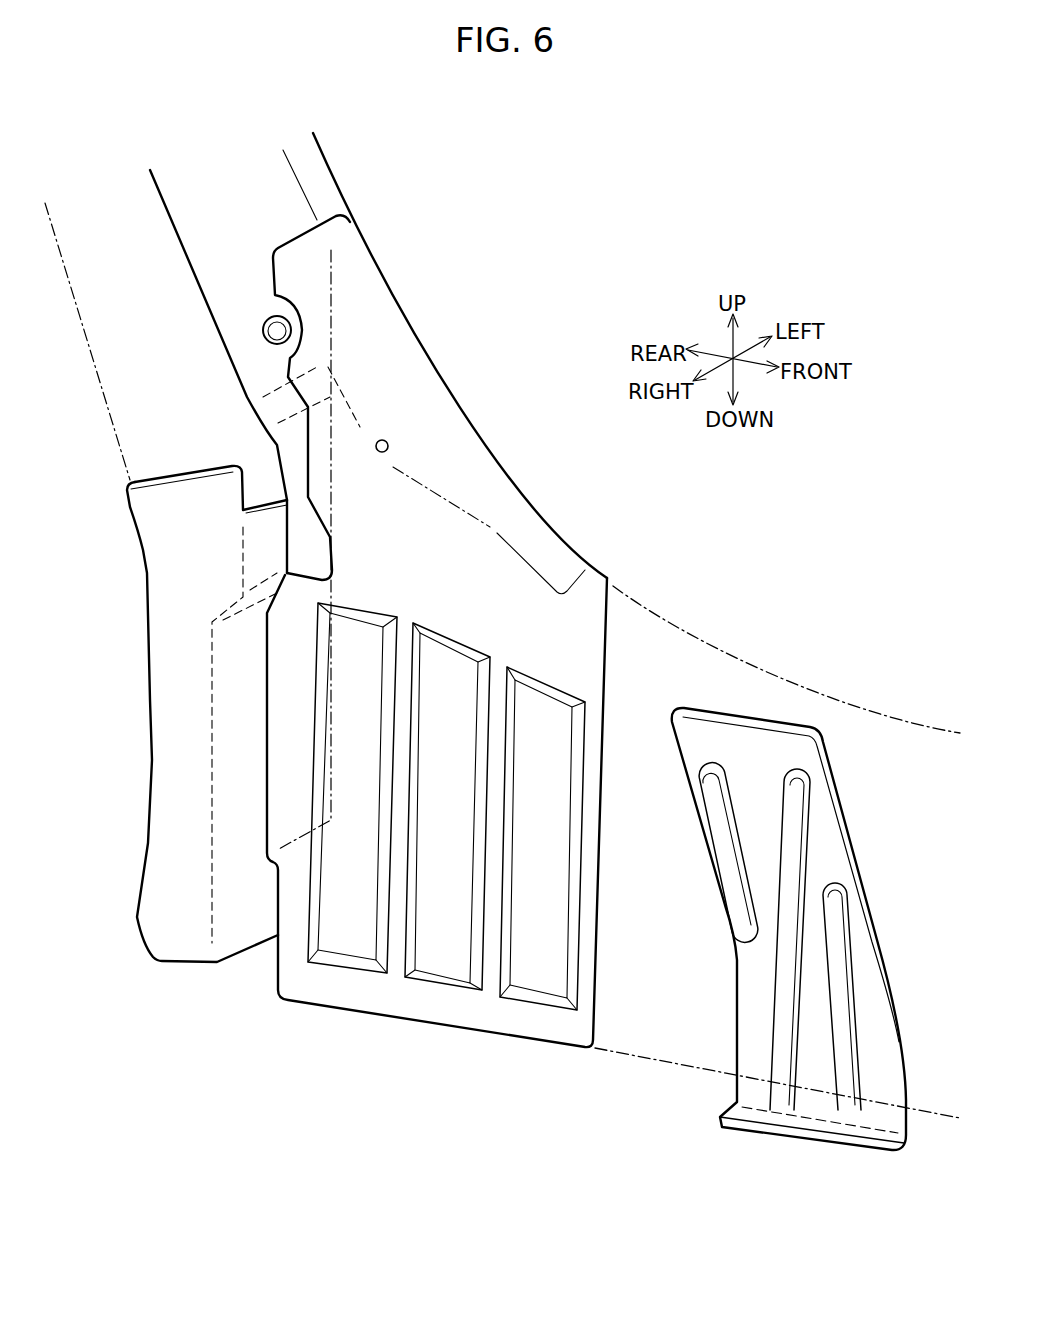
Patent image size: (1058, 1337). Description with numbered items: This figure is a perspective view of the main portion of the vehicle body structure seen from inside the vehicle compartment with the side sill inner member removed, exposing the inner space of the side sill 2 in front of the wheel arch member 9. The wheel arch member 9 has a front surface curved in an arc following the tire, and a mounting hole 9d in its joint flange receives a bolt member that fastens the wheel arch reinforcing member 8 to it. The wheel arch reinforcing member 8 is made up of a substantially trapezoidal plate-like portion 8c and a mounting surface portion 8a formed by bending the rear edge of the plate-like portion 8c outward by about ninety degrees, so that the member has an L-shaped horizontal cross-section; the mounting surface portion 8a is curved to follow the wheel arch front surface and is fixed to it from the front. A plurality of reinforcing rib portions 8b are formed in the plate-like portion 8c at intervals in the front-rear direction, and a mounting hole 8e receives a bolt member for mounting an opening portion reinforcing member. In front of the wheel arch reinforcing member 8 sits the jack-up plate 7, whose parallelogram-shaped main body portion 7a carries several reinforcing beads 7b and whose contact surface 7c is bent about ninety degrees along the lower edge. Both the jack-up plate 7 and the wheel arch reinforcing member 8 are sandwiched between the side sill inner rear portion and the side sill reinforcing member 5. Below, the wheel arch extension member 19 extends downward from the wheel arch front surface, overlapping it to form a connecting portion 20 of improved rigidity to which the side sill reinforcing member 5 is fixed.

The side sill 2 is at (874, 645).
The side sill reinforcing member 5 is at (746, 658).
The jack-up plate 7 is at (763, 720).
The main body portion 7a is at (822, 858).
The reinforcing bead 7b is at (783, 1010).
The contact surface 7c is at (800, 1140).
The wheel arch reinforcing member 8 is at (620, 654).
The mounting surface portion 8a is at (297, 777).
The reinforcing rib portions 8b is at (393, 923).
The plate-like portion 8c is at (467, 601).
The mounting hole 8e is at (385, 443).
The wheel arch member 9 is at (247, 206).
The mounting hole 9d is at (272, 325).
The wheel arch extension member 19 is at (147, 668).
The connecting portion 20 is at (277, 537).